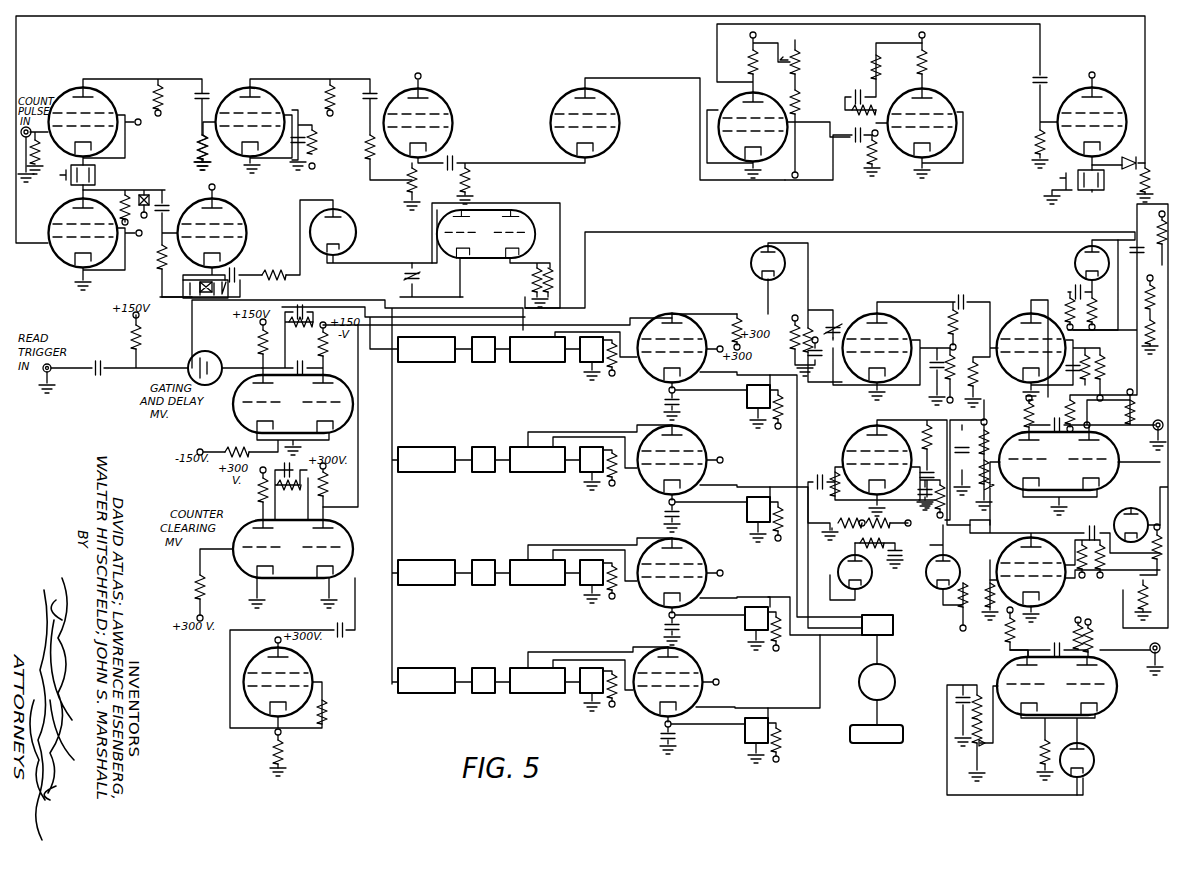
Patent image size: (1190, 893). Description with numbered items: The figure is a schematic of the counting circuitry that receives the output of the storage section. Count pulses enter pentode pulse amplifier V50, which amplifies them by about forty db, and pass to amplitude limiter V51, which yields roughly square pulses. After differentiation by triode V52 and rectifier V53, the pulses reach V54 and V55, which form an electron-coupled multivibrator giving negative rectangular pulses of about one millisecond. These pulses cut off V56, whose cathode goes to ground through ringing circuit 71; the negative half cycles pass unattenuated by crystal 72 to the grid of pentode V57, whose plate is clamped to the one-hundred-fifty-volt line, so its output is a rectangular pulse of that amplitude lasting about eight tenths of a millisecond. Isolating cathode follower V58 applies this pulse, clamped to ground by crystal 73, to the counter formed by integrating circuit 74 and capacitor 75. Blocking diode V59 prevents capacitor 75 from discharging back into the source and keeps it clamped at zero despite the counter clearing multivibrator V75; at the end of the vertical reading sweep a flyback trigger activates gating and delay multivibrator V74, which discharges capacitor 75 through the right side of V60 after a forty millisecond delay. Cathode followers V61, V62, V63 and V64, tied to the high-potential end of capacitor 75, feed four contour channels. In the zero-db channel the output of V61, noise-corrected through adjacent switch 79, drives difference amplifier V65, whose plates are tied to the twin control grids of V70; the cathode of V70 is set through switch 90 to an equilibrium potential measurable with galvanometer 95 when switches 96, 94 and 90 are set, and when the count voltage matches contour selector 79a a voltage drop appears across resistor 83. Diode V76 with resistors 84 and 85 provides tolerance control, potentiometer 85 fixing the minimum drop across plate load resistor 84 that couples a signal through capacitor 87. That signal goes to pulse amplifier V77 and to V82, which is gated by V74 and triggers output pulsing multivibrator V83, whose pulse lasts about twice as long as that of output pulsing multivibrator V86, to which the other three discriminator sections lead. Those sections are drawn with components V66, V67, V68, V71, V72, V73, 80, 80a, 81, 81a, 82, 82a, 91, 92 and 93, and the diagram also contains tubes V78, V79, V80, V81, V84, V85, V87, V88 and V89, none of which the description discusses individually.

The pentode pulse amplifier V50 is at (114, 132).
The amplitude limiter V51 is at (303, 126).
The triode V52 is at (485, 141).
The rectifier V53 is at (667, 126).
The electron-coupled multivibrator tube V54 is at (873, 102).
The electron-coupled multivibrator tube V55 is at (933, 105).
The tube V56 is at (1092, 137).
The pentode V57 is at (103, 243).
The isolating cathode follower V58 is at (247, 241).
The blocking diode V59 is at (373, 231).
The capacitor discharge tube V60 is at (496, 255).
The cathode follower V61 is at (435, 349).
The cathode follower V62 is at (435, 459).
The cathode follower V63 is at (435, 572).
The cathode follower V64 is at (435, 680).
The difference amplifier V65 is at (573, 347).
The storage stage V66 is at (591, 448).
The storage stage V67 is at (591, 561).
The storage stage V68 is at (589, 670).
The twin control grid tube V70 is at (704, 361).
The output tube V71 is at (704, 473).
The output tube V72 is at (704, 585).
The output tube V73 is at (701, 694).
The gating and delay multivibrator V74 is at (275, 381).
The counter clearing multivibrator V75 is at (274, 542).
The diode V76 is at (785, 311).
The pulse amplifier V77 is at (915, 351).
The tube V78 is at (889, 492).
The diode tube V79 is at (866, 571).
The diode tube V80 is at (957, 591).
The diode tube V81 is at (1083, 285).
The gated tube V82 is at (1051, 350).
The output pulsing multivibrator V83 is at (1055, 457).
The tube V84 is at (1065, 571).
The diode tube V85 is at (1114, 513).
The output pulsing multivibrator V86 is at (1055, 706).
The diode tube V87 is at (1094, 769).
The diode tube V88 is at (225, 359).
The tube V89 is at (292, 677).
The ringing circuit 71 is at (1080, 195).
The crystal 72 is at (1128, 170).
The crystal 73 is at (230, 292).
The integrating circuit 74 is at (281, 265).
The capacitor 75 is at (405, 282).
The switch 79 is at (480, 366).
The contour selector 79a is at (584, 364).
The gate 80 is at (480, 476).
The gate 80a is at (584, 474).
The gate 81 is at (480, 589).
The gate 81a is at (584, 587).
The gate 82 is at (480, 697).
The gate 82a is at (584, 695).
The resistor 83 is at (736, 312).
The plate load resistor 84 is at (833, 320).
The potentiometer 85 is at (792, 316).
The capacitor 87 is at (838, 326).
The switch 90 is at (749, 405).
The gate 91 is at (749, 517).
The gate 92 is at (747, 625).
The gate 93 is at (747, 735).
The switch 94 is at (893, 628).
The galvanometer 95 is at (895, 680).
The switch 96 is at (870, 746).